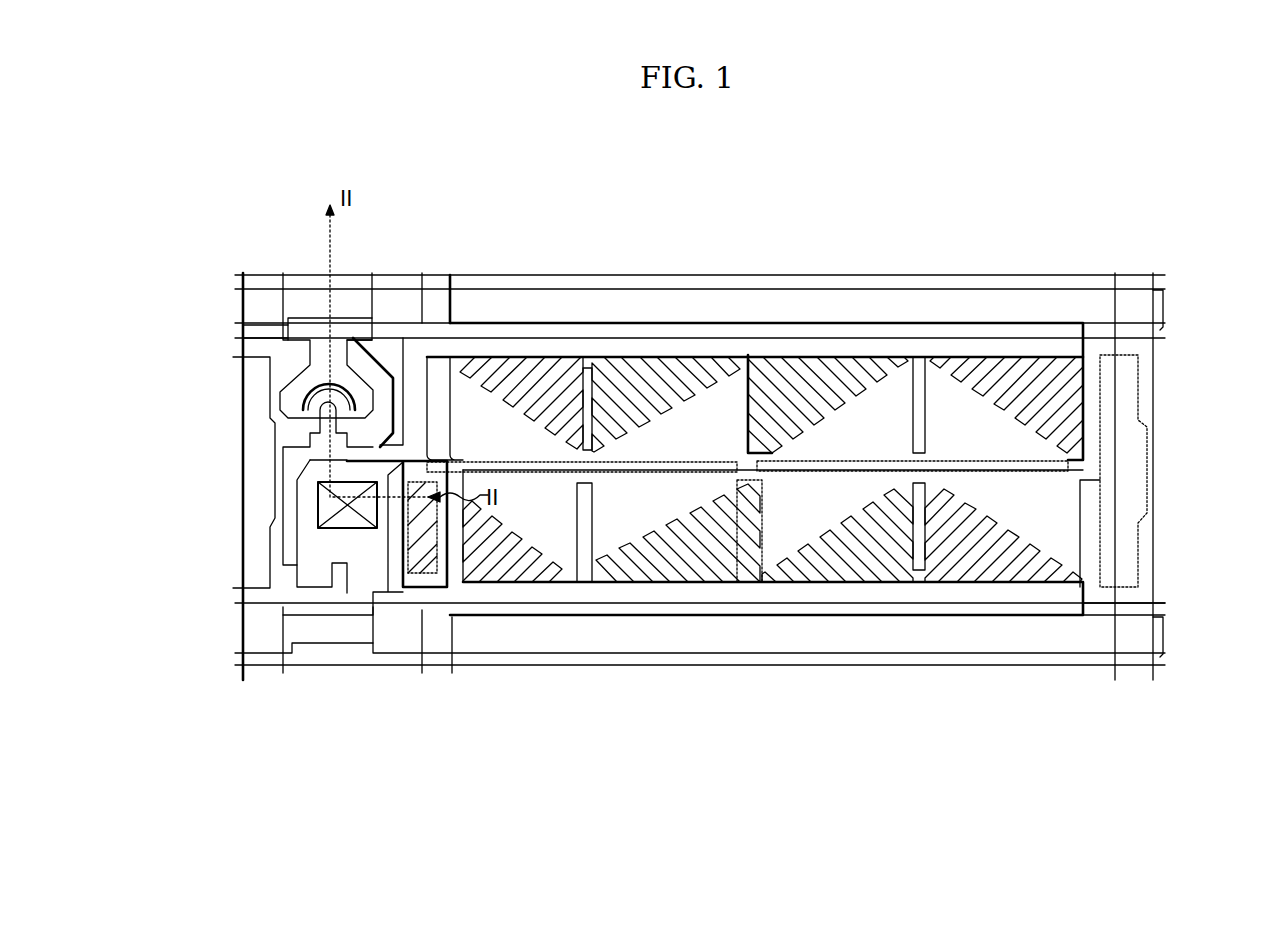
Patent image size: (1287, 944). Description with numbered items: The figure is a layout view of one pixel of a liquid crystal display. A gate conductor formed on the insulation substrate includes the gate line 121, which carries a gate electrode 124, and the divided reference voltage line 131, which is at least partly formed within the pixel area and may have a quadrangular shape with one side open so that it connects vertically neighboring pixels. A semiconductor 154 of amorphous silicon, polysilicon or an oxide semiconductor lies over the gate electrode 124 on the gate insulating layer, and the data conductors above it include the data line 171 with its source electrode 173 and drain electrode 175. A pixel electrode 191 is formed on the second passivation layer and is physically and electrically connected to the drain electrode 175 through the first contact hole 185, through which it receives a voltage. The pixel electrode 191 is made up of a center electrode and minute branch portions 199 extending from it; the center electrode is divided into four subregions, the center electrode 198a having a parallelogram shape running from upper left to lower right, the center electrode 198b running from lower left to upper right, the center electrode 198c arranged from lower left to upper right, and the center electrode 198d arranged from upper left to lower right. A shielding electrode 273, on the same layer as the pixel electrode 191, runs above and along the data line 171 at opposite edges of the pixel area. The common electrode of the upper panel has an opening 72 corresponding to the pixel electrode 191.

The opening 72 is at (691, 473).
The gate line 121 is at (243, 553).
The gate electrode 124 is at (309, 337).
The divided reference voltage line 131 is at (1100, 327).
The semiconductor 154 is at (303, 410).
The data line 171 is at (700, 288).
The source electrode 173 is at (340, 392).
The drain electrode 175 is at (295, 430).
The first contact hole 185 is at (353, 530).
The pixel electrode 191 is at (1083, 560).
The center electrode 198a is at (437, 413).
The center electrode 198b is at (610, 543).
The center electrode 198c is at (780, 547).
The center electrode 198d is at (1063, 507).
The minute branch portions 199 is at (647, 387).
The shielding electrode 273 is at (773, 274).